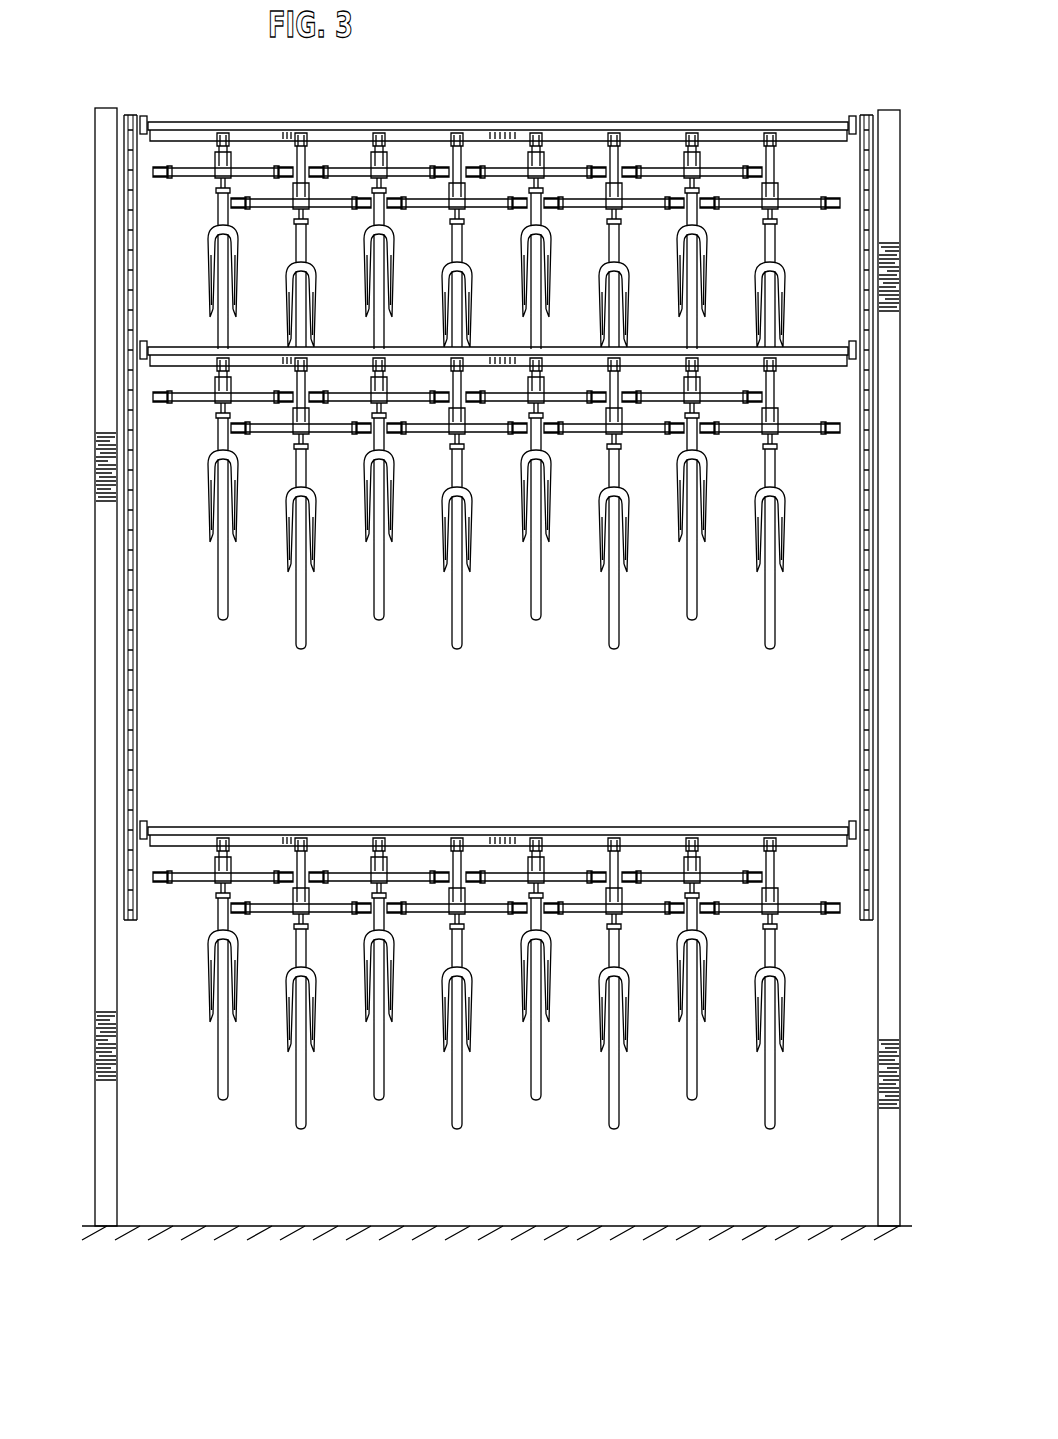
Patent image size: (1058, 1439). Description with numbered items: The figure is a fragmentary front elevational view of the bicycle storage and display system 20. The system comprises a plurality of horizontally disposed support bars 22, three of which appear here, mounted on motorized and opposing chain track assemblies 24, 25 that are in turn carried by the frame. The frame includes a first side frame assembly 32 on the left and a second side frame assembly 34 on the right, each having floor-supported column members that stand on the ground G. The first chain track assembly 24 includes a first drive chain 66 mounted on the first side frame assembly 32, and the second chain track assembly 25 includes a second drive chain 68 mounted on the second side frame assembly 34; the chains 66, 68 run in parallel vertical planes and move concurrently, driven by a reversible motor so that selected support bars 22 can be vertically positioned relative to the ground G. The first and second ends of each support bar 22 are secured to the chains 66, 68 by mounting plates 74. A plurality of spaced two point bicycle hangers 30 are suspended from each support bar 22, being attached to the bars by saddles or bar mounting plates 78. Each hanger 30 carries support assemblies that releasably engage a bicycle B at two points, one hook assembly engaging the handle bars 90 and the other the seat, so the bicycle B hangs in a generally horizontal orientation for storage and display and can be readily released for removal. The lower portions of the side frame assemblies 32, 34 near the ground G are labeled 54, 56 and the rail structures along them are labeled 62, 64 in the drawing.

The bicycle storage and display system 20 is at (824, 104).
The support bar 22 is at (733, 128).
The first chain track assembly 24 is at (143, 164).
The second chain track assembly 25 is at (858, 182).
The bicycle hanger 30 is at (775, 383).
The first side frame assembly 32 is at (103, 96).
The second side frame assembly 34 is at (886, 100).
The left post lower portion 54 is at (108, 776).
The right post lower portion 56 is at (890, 777).
The left vertical rail 62 is at (118, 643).
The right vertical rail 64 is at (873, 700).
The first drive chain 66 is at (122, 556).
The second drive chain 68 is at (872, 523).
The mounting plate 74 is at (148, 822).
The bar mounting plate 78 is at (456, 135).
The handle bars 90 is at (270, 428).
The bicycle B is at (613, 645).
The ground G is at (148, 1226).